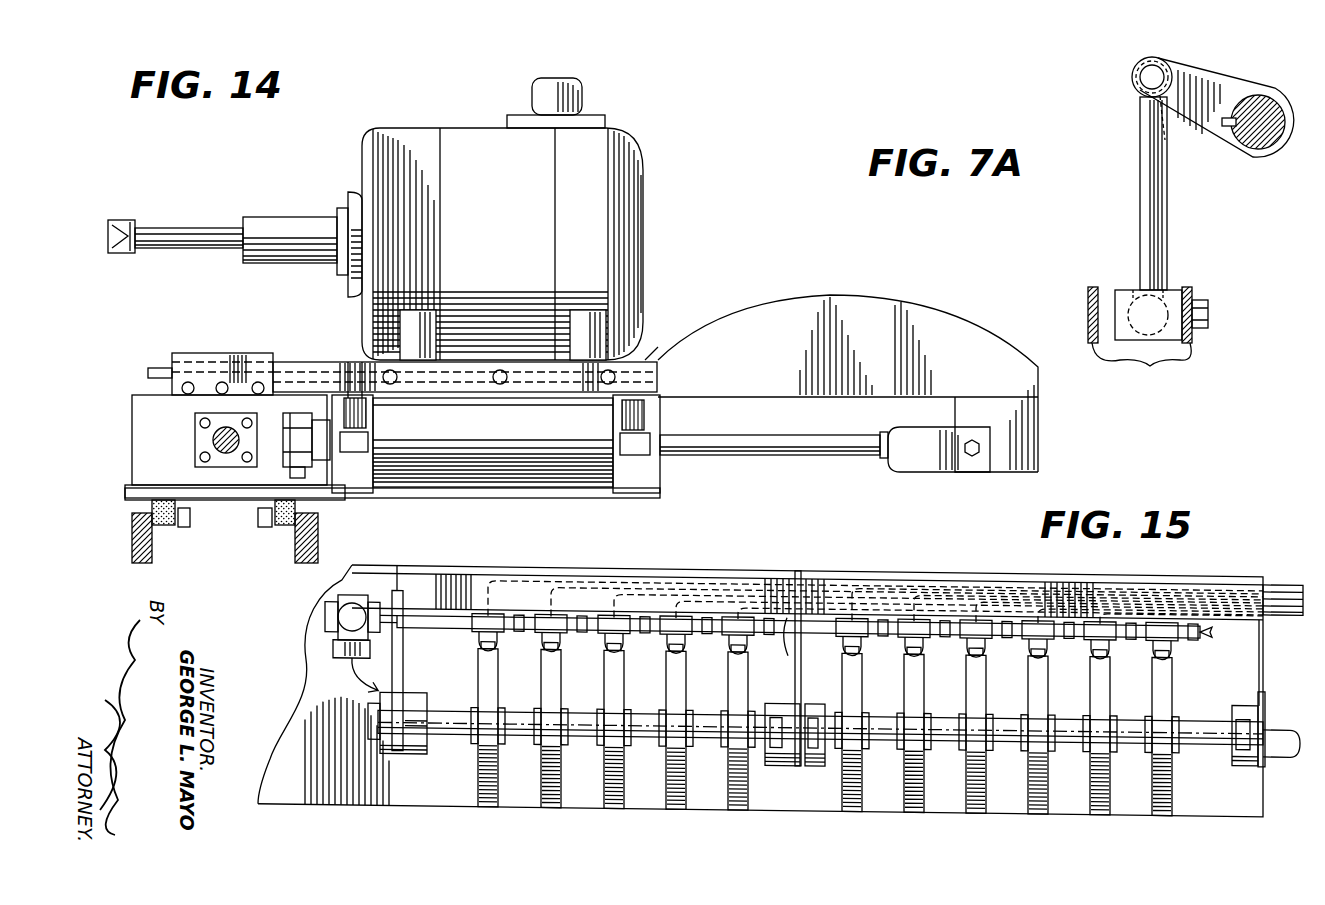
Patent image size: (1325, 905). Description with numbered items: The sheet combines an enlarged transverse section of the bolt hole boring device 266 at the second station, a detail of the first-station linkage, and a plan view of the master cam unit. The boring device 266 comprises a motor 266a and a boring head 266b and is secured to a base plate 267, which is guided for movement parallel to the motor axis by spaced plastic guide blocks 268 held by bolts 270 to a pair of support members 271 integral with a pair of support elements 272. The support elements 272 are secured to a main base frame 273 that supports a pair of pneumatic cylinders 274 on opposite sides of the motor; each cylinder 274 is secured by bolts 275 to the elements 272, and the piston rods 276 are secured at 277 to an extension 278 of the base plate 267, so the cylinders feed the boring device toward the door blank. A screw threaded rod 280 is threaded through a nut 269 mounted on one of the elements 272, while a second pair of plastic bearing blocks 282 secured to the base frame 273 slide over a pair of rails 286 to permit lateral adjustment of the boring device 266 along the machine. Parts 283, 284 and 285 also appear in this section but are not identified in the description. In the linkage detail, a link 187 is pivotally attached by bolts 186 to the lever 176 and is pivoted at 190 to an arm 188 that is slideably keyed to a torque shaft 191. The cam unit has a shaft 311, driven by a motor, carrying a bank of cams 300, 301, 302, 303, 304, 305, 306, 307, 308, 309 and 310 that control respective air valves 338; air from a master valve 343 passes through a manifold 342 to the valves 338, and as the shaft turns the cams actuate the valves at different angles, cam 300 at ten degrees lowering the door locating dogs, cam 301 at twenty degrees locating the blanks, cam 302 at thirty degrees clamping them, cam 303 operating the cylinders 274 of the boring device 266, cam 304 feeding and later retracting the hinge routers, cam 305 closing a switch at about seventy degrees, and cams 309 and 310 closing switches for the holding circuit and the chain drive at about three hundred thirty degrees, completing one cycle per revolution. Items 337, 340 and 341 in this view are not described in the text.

In FIG. 14, the bolt hole boring device 266 is at (517, 182).
In FIG. 14, the motor 266a is at (645, 216).
In FIG. 14, the boring head 266b is at (122, 220).
In FIG. 14, the base plate 267 is at (306, 364).
In FIG. 14, the plastic guide blocks 268 is at (236, 382).
In FIG. 14, the nut 269 is at (195, 424).
In FIG. 14, the bolts 270 is at (192, 392).
In FIG. 14, the support members 271 is at (205, 353).
In FIG. 14, the support elements 272 is at (178, 467).
In FIG. 14, the main base frame 273 is at (470, 500).
In FIG. 14, the pneumatic cylinders 274 is at (545, 456).
In FIG. 14, the bolts 275 is at (355, 412).
In FIG. 14, the piston rods 276 is at (830, 456).
In FIG. 14, the securing connection 277 is at (972, 457).
In FIG. 14, the extension 278 is at (948, 363).
In FIG. 14, the screw threaded rod 280 is at (226, 454).
In FIG. 14, the plastic bearing blocks 282 is at (186, 528).
In FIG. 14, the spacer 283 is at (263, 528).
In FIG. 14, the pad 284 is at (295, 516).
In FIG. 14, the end plate 285 is at (372, 465).
In FIG. 14, the rails 286 is at (155, 508).
In FIG. 7A, the lever 176 is at (1140, 339).
In FIG. 7A, the bolts 186 is at (1210, 313).
In FIG. 7A, the link 187 is at (1167, 220).
In FIG. 7A, the arm 188 is at (1208, 138).
In FIG. 7A, the pivot 190 is at (1150, 80).
In FIG. 7A, the torque shaft 191 is at (1262, 148).
In FIG. 15, the cam 300 is at (494, 800).
In FIG. 15, the cam 301 is at (557, 800).
In FIG. 15, the cam 302 is at (620, 800).
In FIG. 15, the cam 303 is at (682, 800).
In FIG. 15, the cam 304 is at (744, 800).
In FIG. 15, the cam 305 is at (858, 800).
In FIG. 15, the cam 306 is at (920, 800).
In FIG. 15, the cam 307 is at (982, 800).
In FIG. 15, the cam 308 is at (1044, 800).
In FIG. 15, the cam 309 is at (1106, 800).
In FIG. 15, the cam 310 is at (1168, 800).
In FIG. 15, the shaft 311 is at (458, 737).
In FIG. 15, the supply pipe 337 is at (448, 610).
In FIG. 15, the air valves 338 is at (1213, 622).
In FIG. 15, the bearing 340 is at (395, 700).
In FIG. 15, the rod 341 is at (797, 610).
In FIG. 15, the manifold 342 is at (818, 618).
In FIG. 15, the master valve 343 is at (348, 616).